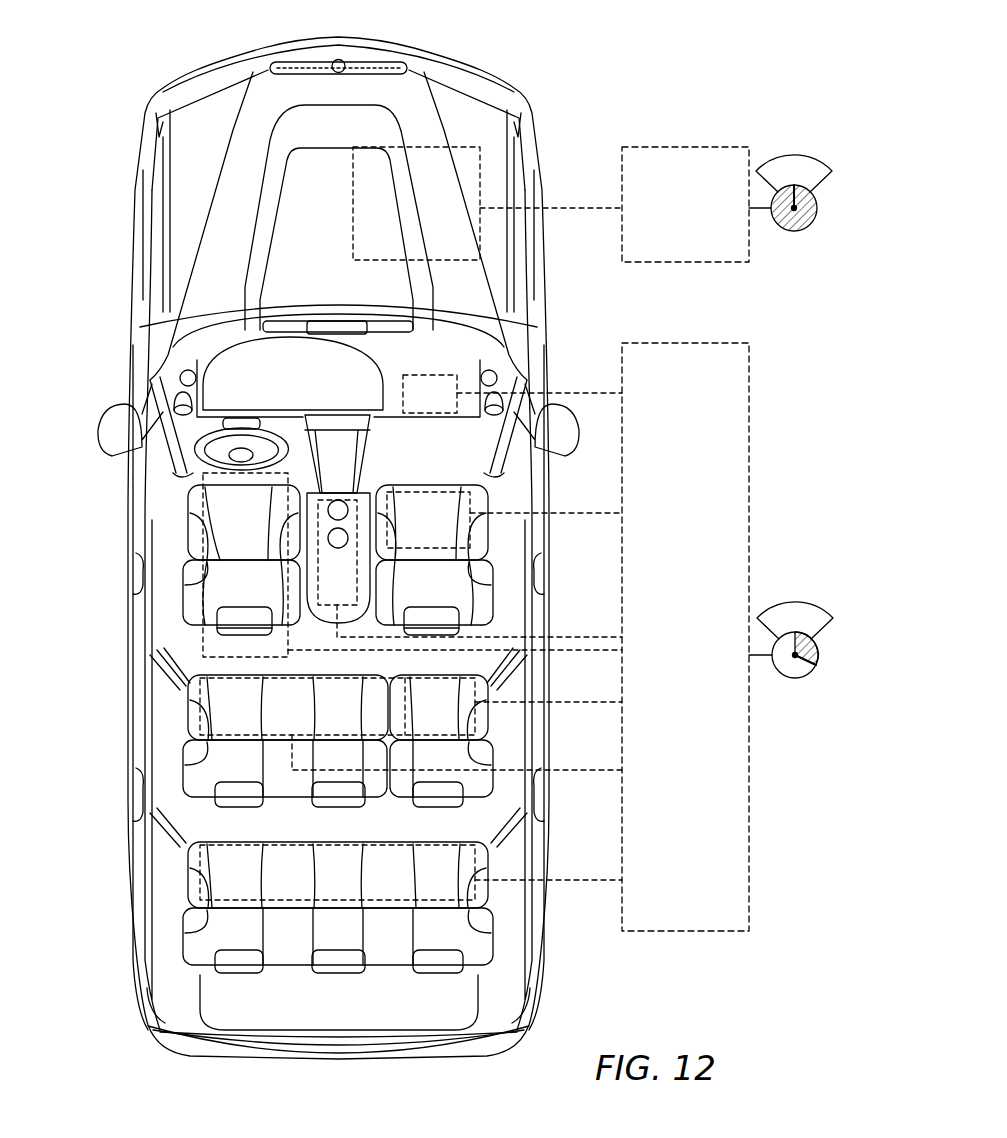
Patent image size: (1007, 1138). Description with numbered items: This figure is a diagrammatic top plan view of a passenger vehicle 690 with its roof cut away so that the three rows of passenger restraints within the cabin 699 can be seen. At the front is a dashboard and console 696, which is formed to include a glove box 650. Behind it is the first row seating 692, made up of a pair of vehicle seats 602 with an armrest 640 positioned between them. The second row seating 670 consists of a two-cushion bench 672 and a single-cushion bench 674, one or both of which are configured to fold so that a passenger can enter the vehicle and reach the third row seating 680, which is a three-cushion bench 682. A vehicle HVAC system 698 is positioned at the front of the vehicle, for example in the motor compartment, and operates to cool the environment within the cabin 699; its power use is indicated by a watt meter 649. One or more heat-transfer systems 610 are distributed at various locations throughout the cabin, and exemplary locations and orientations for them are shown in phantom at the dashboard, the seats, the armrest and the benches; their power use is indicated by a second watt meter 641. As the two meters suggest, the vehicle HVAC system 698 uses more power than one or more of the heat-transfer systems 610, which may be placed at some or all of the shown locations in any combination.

The passenger vehicle 690 is at (118, 67).
The vehicle HVAC system 698 is at (697, 147).
The watt meter 649 is at (795, 155).
The heat-transfer systems 610 is at (705, 343).
The watt meter 641 is at (795, 602).
The dashboard and console 696 is at (262, 372).
The glove box 650 is at (466, 380).
The cabin 699 is at (173, 517).
The first row seating 692 is at (173, 570).
The vehicle seats 602 is at (177, 612).
The armrest 640 is at (322, 623).
The second row seating 670 is at (183, 740).
The two-cushion bench 672 is at (177, 770).
The single-cushion bench 674 is at (493, 745).
The three-cushion bench 682 is at (185, 882).
The third row seating 680 is at (185, 910).